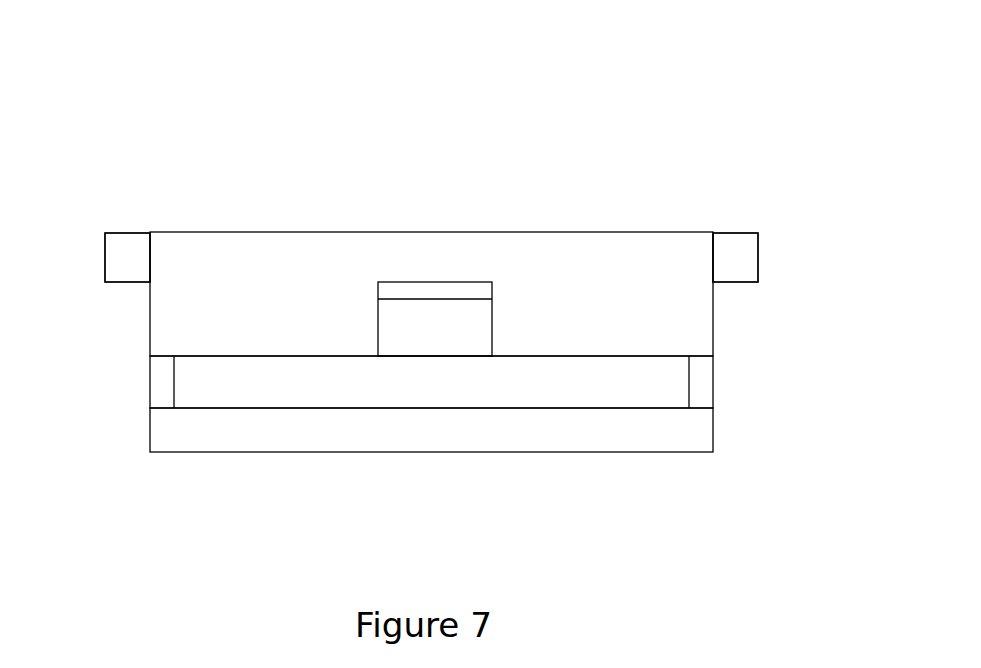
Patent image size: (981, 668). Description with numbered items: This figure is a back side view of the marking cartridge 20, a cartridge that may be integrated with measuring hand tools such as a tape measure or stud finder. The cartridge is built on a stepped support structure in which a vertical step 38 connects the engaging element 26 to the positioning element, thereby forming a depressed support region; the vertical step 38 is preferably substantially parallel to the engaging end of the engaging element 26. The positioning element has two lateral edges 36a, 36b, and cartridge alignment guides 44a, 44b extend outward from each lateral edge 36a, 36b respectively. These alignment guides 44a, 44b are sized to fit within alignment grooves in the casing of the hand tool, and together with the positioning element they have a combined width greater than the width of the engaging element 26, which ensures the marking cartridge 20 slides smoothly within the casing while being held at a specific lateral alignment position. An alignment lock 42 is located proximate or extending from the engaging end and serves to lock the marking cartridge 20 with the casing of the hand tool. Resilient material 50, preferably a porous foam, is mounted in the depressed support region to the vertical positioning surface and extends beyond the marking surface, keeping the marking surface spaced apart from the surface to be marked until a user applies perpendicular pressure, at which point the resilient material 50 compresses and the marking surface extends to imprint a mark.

The marking cartridge 20 is at (548, 88).
The vertical step 38 is at (273, 268).
The lateral edge 36a is at (105, 255).
The lateral edge 36b is at (758, 253).
The cartridge alignment guide 44a is at (127, 252).
The cartridge alignment guide 44b is at (737, 247).
The alignment lock 42 is at (450, 340).
The engaging element 26 is at (453, 397).
The resilient material 50 is at (453, 446).